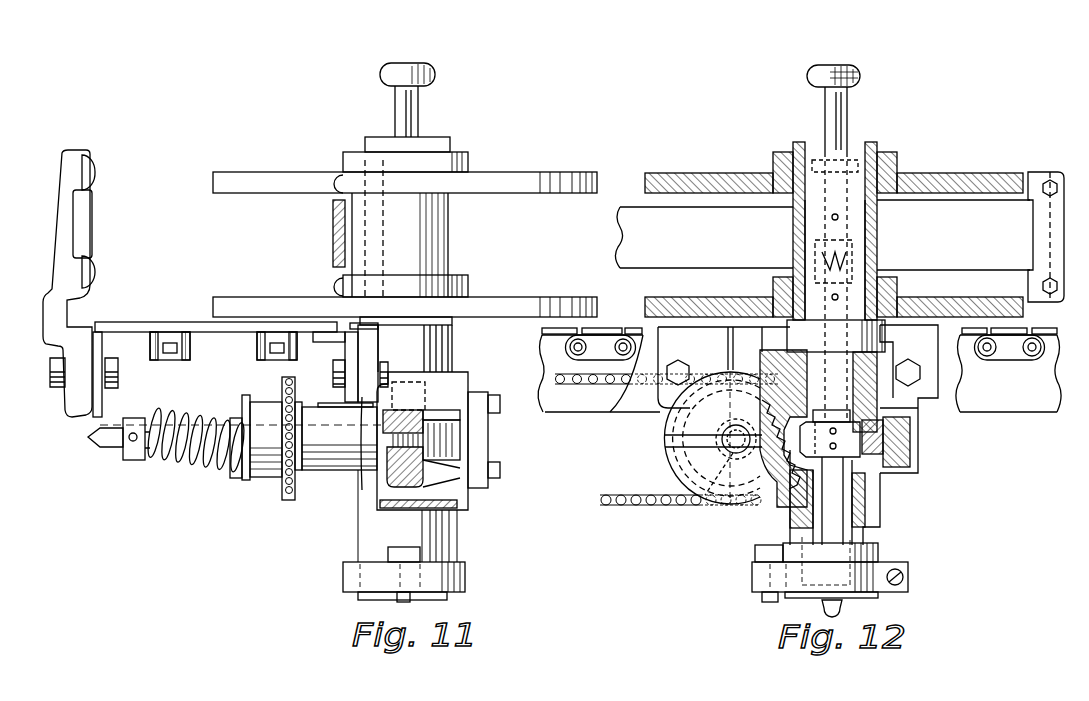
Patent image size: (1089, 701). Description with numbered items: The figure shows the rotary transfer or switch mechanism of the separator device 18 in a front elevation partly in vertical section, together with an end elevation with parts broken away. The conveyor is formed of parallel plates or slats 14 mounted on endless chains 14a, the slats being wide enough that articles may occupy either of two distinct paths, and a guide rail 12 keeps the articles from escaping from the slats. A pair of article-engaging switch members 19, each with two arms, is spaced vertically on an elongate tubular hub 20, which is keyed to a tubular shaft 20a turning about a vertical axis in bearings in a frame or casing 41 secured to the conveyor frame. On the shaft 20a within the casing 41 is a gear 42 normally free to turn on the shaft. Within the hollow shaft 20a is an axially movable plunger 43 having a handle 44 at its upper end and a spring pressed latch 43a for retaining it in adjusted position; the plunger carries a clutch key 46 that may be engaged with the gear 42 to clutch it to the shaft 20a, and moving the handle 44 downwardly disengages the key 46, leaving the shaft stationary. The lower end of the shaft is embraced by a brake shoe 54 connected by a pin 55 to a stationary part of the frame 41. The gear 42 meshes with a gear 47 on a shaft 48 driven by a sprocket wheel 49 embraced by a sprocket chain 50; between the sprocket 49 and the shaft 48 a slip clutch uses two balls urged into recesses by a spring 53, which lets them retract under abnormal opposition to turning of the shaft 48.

In FIG. 11, the guide rail 12 is at (92, 175).
In FIG. 11, the parallel plates or slats 14 is at (162, 313).
In FIG. 12, the parallel plates or slats 14 is at (615, 328).
In FIG. 11, the endless chains 14a is at (247, 340).
In FIG. 12, the endless chains 14a is at (1009, 362).
In FIG. 11, the separator device 18 is at (320, 126).
In FIG. 12, the separator device 18 is at (749, 155).
In FIG. 11, the article-engaging switch members 19 is at (511, 180).
In FIG. 12, the article-engaging switch members 19 is at (987, 178).
In FIG. 11, the tubular hub 20 is at (440, 143).
In FIG. 12, the tubular hub 20 is at (877, 150).
In FIG. 12, the tubular shaft 20a is at (800, 228).
In FIG. 11, the frame or casing 41 is at (437, 536).
In FIG. 12, the frame or casing 41 is at (879, 509).
In FIG. 11, the gear 42 is at (460, 425).
In FIG. 12, the gear 42 is at (885, 452).
In FIG. 11, the plunger 43 is at (418, 107).
In FIG. 12, the plunger 43 is at (842, 116).
In FIG. 12, the spring pressed latch 43a is at (856, 261).
In FIG. 11, the handle 44 is at (428, 70).
In FIG. 12, the handle 44 is at (840, 70).
In FIG. 12, the clutch key 46 is at (843, 445).
In FIG. 11, the gear 47 is at (424, 480).
In FIG. 12, the gear 47 is at (747, 490).
In FIG. 11, the shaft 48 is at (424, 470).
In FIG. 12, the shaft 48 is at (709, 490).
In FIG. 11, the sprocket wheel 49 is at (295, 483).
In FIG. 12, the sprocket wheel 49 is at (688, 460).
In FIG. 12, the sprocket chain 50 is at (642, 505).
In FIG. 11, the spring 53 is at (195, 421).
In FIG. 11, the brake shoe 54 is at (466, 584).
In FIG. 12, the brake shoe 54 is at (892, 563).
In FIG. 11, the pin 55 is at (404, 603).
In FIG. 12, the pin 55 is at (763, 597).